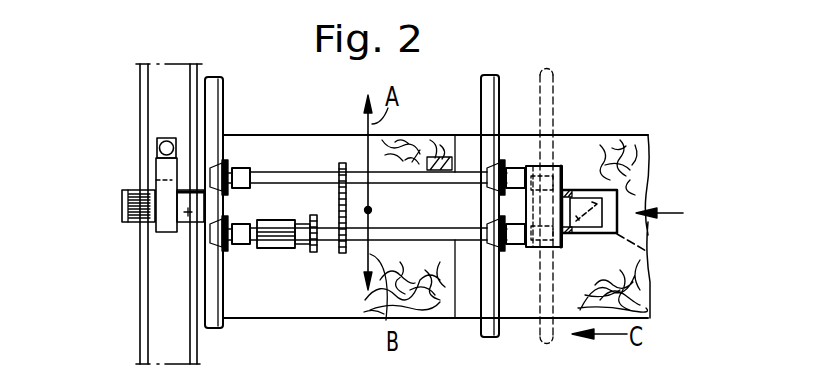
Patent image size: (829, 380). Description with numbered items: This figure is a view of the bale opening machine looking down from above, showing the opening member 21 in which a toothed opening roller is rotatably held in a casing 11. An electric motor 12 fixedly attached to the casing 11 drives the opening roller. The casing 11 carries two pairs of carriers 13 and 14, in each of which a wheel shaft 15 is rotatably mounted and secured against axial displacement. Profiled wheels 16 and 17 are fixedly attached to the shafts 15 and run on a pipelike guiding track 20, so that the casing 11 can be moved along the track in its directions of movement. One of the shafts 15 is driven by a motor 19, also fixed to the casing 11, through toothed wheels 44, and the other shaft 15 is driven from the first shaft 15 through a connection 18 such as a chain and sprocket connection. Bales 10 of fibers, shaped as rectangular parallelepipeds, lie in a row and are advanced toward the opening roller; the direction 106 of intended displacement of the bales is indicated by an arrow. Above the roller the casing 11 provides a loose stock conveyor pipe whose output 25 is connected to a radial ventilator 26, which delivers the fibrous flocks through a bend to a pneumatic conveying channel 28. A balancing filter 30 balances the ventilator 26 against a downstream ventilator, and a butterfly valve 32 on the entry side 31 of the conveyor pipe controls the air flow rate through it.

The bales 10 is at (306, 145).
The casing 11 is at (428, 161).
The electric motor 12 is at (581, 236).
The carriers 13 is at (244, 246).
The carriers 14 is at (245, 173).
The wheel shafts 15 is at (400, 184).
The profiled wheels 16 is at (224, 252).
The profiled wheels 17 is at (225, 161).
The connection 18 is at (343, 161).
The motor 19 is at (283, 250).
The pipelike guiding track 20 is at (215, 85).
The opening member 21 is at (397, 252).
The output 25 is at (189, 224).
The ventilator 26 is at (162, 186).
The pneumatic conveying channel 28 is at (160, 337).
The balancing filter 30 is at (160, 148).
The entry side 31 is at (581, 190).
The butterfly valve 32 is at (648, 252).
The toothed wheels 44 is at (316, 254).
The direction of intended displacement 106 is at (673, 211).